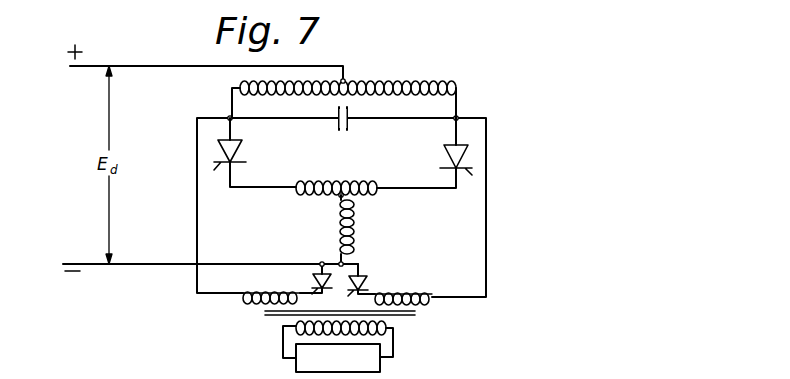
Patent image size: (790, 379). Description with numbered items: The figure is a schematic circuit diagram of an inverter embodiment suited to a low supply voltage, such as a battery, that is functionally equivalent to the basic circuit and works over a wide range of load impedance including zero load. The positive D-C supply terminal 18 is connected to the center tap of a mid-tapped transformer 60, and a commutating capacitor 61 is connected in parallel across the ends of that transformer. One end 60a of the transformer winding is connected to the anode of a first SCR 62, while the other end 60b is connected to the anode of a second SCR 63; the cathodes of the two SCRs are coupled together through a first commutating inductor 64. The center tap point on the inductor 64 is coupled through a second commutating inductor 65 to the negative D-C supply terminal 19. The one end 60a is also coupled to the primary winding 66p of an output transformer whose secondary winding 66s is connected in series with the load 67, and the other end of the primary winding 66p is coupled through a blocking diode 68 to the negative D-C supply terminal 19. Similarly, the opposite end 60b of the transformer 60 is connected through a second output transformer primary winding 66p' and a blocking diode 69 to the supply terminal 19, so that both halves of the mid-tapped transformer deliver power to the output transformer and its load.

The positive D-C supply terminal 18 is at (133, 66).
The negative D-C supply terminal 19 is at (112, 266).
The mid-tapped transformer 60 is at (380, 81).
The one end of the winding of transformer 60a is at (230, 90).
The other end of the transformer 60b is at (458, 90).
The commutating capacitor 61 is at (337, 120).
The first SCR 62 is at (238, 149).
The second SCR 63 is at (443, 153).
The first commutating inductor 64 is at (346, 174).
The second commutating inductor 65 is at (357, 228).
The primary winding of output transformer 66p is at (257, 288).
The second output transformer primary winding 66p' is at (410, 288).
The secondary winding 66s is at (395, 332).
The load 67 is at (283, 359).
The blocking diode 68 is at (311, 281).
The blocking diode 69 is at (366, 281).